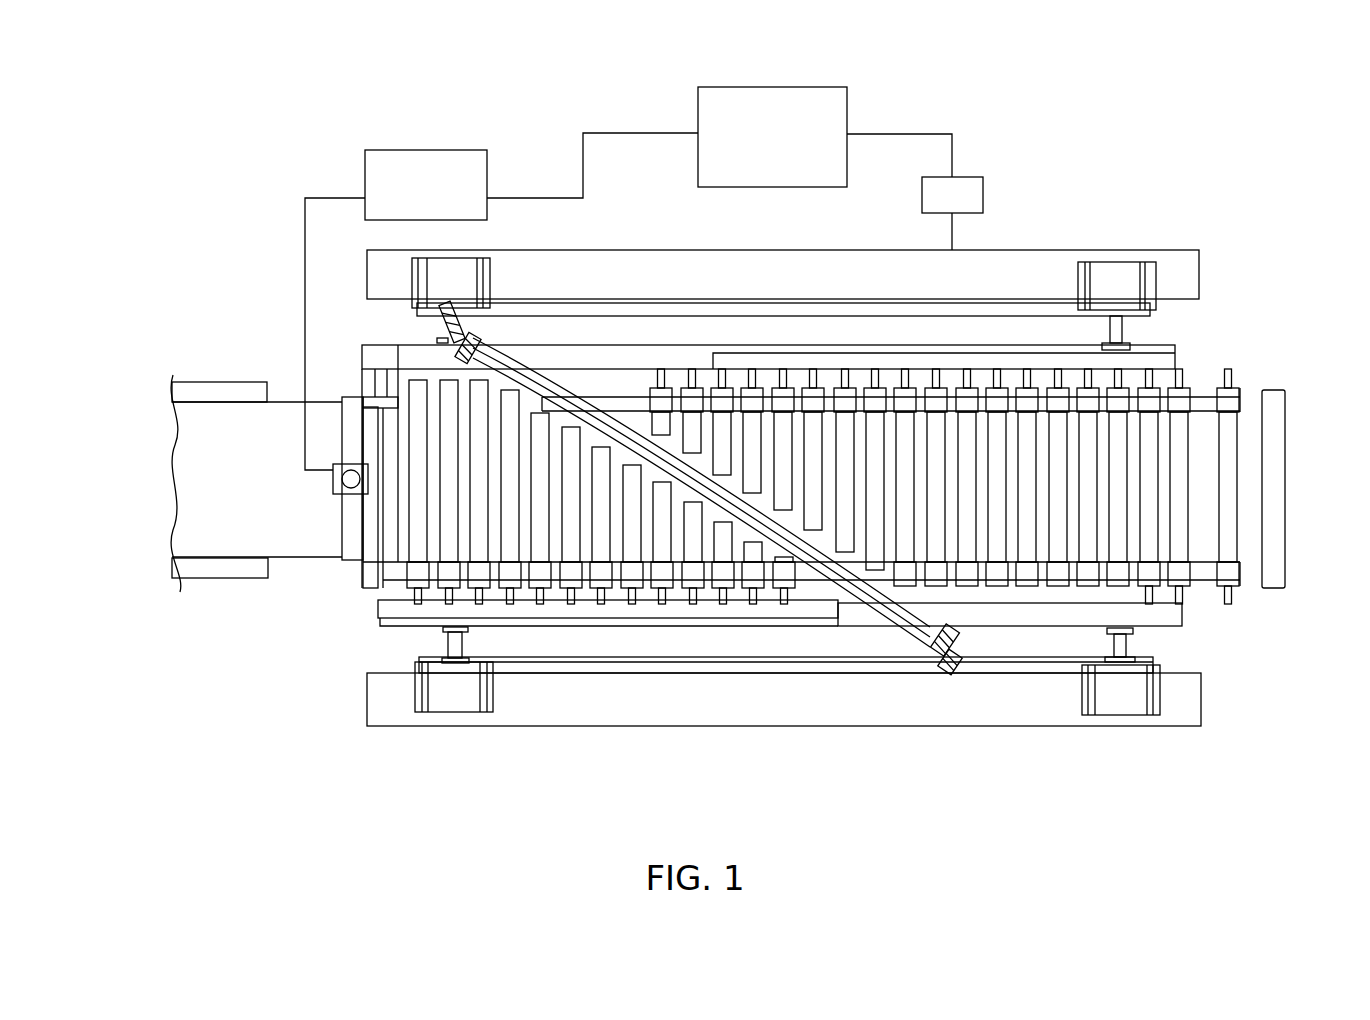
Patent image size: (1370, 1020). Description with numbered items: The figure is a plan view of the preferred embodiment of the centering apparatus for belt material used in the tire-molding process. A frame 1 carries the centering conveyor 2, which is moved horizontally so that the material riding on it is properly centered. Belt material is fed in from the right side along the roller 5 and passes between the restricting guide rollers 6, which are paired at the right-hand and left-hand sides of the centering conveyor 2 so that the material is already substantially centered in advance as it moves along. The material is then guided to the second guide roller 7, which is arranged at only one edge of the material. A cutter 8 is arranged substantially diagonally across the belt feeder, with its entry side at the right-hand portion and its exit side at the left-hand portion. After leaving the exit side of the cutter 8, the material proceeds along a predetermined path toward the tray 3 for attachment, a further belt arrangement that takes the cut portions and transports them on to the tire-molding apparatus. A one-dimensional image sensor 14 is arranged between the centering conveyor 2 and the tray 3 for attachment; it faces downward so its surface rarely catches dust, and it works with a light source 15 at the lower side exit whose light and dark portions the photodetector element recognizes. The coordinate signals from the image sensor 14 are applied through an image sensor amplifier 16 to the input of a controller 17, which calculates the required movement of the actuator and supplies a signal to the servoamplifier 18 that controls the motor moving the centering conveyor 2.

The frame 1 is at (992, 725).
The centering conveyor 2 is at (740, 628).
The tray for attachment 3 is at (225, 380).
The roller 5 is at (1240, 495).
The restricting guide rollers 6 is at (1197, 393).
The second guide roller 7 is at (405, 582).
The cutter 8 is at (927, 635).
The one-dimensional image sensor 14 is at (333, 493).
The light source 15 is at (345, 563).
The image sensor amplifier 16 is at (472, 148).
The controller 17 is at (698, 105).
The servoamplifier 18 is at (983, 193).